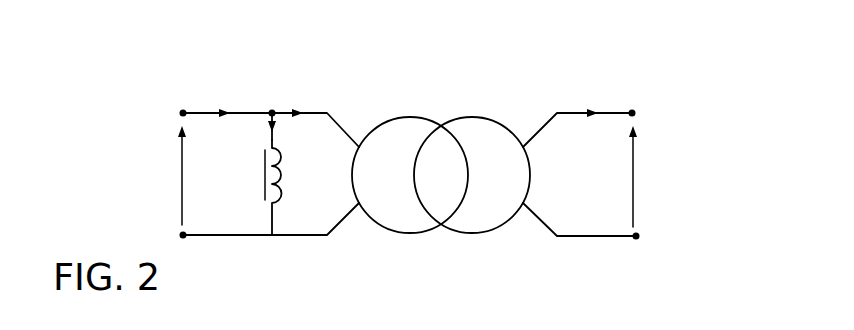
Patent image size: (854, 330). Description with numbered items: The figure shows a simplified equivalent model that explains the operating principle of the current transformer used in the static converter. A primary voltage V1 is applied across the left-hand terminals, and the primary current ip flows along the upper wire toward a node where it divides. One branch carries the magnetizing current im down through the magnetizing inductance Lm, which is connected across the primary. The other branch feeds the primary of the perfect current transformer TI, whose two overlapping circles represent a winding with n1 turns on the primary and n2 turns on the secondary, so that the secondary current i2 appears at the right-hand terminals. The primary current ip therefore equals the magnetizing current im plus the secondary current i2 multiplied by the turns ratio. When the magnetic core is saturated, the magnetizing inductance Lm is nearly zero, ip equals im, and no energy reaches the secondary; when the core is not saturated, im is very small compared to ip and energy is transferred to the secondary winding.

The primary voltage V1 is at (169, 175).
The primary current ip is at (221, 101).
The magnetizing current im is at (252, 130).
The magnetizing inductance Lm is at (293, 187).
The secondary current i2 is at (333, 91).
The perfect current transformer TI is at (441, 175).